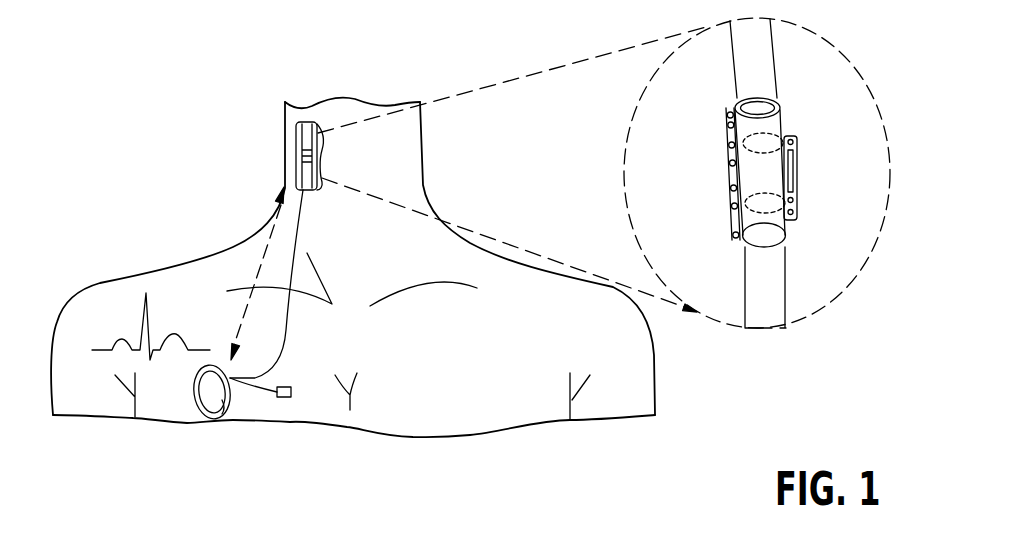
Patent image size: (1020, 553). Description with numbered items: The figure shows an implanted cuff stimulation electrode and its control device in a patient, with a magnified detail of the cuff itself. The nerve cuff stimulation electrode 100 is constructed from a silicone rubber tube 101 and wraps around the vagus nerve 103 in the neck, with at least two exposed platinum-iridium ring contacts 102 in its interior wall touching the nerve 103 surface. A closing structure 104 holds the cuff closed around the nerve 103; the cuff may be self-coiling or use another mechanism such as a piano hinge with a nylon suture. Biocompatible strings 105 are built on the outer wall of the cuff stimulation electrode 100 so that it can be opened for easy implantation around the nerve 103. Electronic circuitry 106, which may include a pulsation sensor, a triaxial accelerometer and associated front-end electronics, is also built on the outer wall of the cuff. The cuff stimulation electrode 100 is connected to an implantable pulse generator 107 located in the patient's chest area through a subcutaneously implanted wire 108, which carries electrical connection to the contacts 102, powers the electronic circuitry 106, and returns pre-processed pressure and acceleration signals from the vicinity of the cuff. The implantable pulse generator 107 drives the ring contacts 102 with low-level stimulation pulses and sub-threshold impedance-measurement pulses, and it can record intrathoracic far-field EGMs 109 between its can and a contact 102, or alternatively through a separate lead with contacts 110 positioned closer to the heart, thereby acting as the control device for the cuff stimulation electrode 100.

The nerve cuff stimulation electrode 100 is at (295, 158).
The silicone rubber tube 101 is at (783, 117).
The ring contacts 102 is at (730, 188).
The vagus nerve 103 is at (745, 285).
The closing structure 104 is at (730, 137).
The biocompatible strings 105 is at (730, 233).
The electronic circuitry 106 is at (798, 175).
The implantable pulse generator 107 is at (227, 420).
The subcutaneously implanted wire 108 is at (288, 311).
The intrathoracic far-field EGMs 109 is at (127, 329).
The separate lead with contacts 110 is at (291, 397).